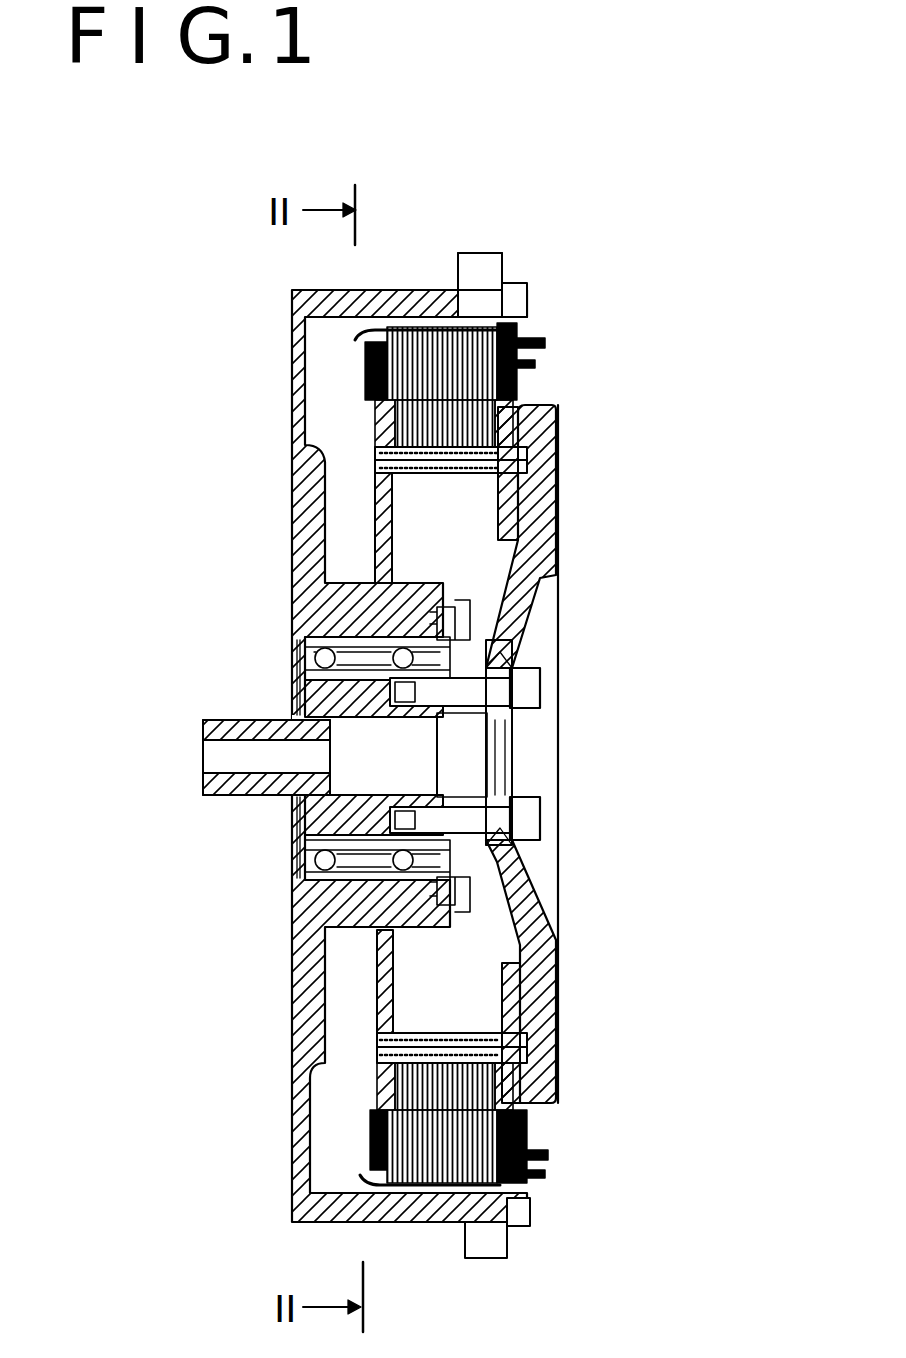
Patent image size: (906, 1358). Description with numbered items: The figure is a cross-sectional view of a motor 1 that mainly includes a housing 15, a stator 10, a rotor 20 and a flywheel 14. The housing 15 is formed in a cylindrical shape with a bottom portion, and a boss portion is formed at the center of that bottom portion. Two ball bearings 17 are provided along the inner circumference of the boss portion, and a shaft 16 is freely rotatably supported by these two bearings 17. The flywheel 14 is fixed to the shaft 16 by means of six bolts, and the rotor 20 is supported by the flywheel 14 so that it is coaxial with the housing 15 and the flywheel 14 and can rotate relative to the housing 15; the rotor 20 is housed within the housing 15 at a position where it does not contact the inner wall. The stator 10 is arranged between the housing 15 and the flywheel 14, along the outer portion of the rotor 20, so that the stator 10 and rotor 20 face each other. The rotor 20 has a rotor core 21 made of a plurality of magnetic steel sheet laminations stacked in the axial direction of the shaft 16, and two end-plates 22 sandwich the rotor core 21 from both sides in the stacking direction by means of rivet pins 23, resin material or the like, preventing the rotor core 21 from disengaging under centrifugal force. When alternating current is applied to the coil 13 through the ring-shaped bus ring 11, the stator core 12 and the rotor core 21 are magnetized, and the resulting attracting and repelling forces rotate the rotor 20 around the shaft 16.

The motor 1 is at (481, 201).
The stator 10 is at (668, 297).
The bus ring 11 is at (520, 330).
The stator core 12 is at (520, 387).
The coil 13 is at (520, 370).
The flywheel 14 is at (548, 537).
The housing 15 is at (292, 418).
The shaft 16 is at (203, 733).
The bearings 17 is at (392, 697).
The rotor 20 is at (150, 480).
The rotor core 21 is at (375, 525).
The end-plates 22 is at (375, 583).
The rivet pins 23 is at (375, 470).